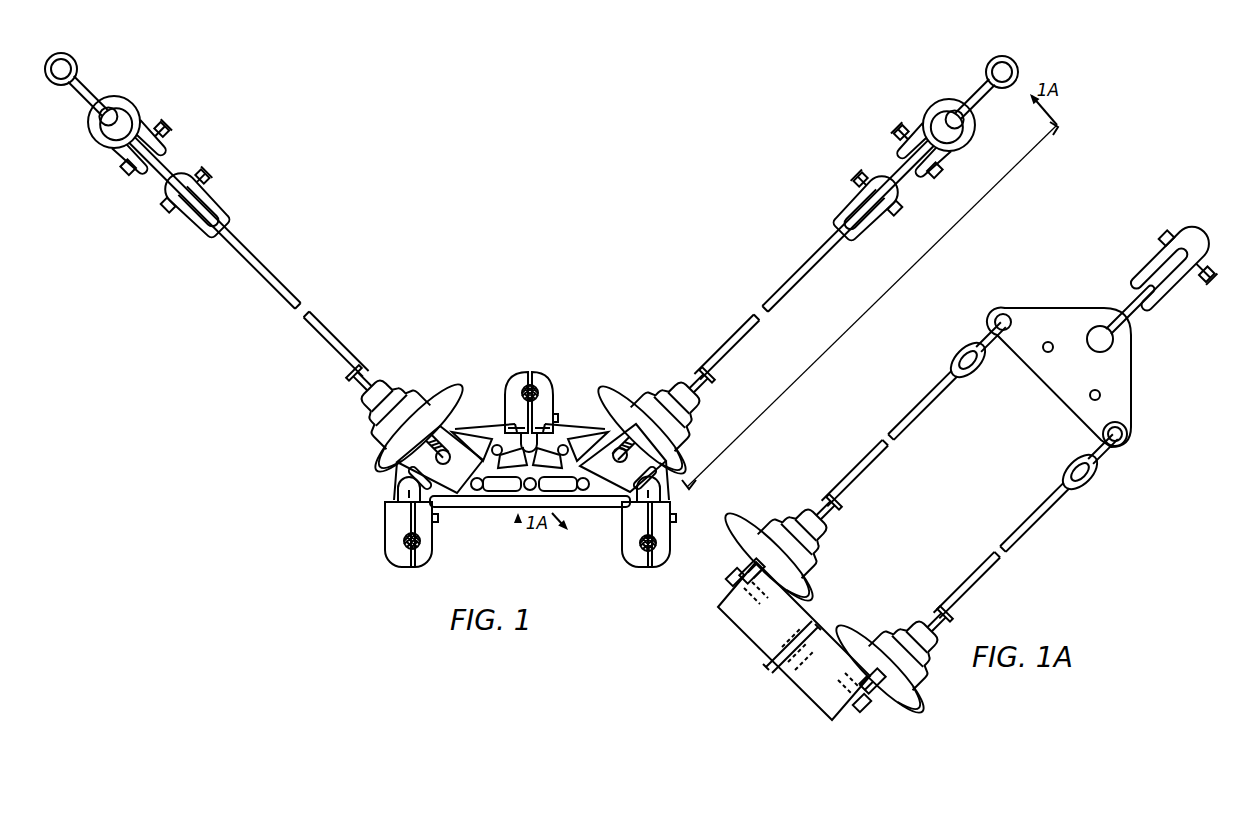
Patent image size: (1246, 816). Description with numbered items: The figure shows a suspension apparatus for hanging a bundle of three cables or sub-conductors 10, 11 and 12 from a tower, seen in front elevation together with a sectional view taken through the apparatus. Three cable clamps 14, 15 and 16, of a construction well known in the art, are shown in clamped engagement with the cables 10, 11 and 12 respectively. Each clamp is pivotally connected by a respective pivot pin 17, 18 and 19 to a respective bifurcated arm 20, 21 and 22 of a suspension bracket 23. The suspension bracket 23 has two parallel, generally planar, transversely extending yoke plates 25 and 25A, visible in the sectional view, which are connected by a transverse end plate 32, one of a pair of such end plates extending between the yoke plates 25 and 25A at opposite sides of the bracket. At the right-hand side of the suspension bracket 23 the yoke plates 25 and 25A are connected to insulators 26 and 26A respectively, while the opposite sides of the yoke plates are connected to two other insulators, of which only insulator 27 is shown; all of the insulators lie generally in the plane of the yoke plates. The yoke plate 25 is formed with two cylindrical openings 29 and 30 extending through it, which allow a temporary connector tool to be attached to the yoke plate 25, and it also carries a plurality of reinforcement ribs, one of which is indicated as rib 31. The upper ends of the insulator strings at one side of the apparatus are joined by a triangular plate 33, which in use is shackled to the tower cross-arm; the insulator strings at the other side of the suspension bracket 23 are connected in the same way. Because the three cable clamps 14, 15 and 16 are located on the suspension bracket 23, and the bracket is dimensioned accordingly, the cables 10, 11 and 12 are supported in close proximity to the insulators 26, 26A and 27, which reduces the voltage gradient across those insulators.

In FIG. 1, the cable 10 is at (418, 548).
In FIG. 1, the cable 11 is at (658, 545).
In FIG. 1, the cable 12 is at (540, 390).
In FIG. 1, the cable clamp 14 is at (398, 556).
In FIG. 1, the cable clamp 15 is at (637, 556).
In FIG. 1, the cable clamp 16 is at (513, 385).
In FIG. 1, the pivot pin 17 is at (437, 519).
In FIG. 1, the pivot pin 18 is at (676, 519).
In FIG. 1, the pivot pin 19 is at (557, 419).
In FIG. 1, the bifurcated arm 20 is at (397, 494).
In FIG. 1, the bifurcated arm 21 is at (659, 491).
In FIG. 1, the bifurcated arm 22 is at (512, 435).
In FIG. 1, the suspension bracket 23 is at (518, 517).
In FIG. 1, the yoke plate 25 is at (511, 497).
In FIG. 1A, the yoke plate 25 is at (726, 600).
In FIG. 1A, the yoke plate 25A is at (826, 718).
In FIG. 1, the insulator 26 is at (680, 450).
In FIG. 1A, the insulator 26 is at (804, 587).
In FIG. 1A, the insulator 26A is at (852, 632).
In FIG. 1, the insulator 27 is at (385, 452).
In FIG. 1, the cylindrical opening 29 is at (477, 490).
In FIG. 1, the cylindrical opening 30 is at (585, 490).
In FIG. 1, the reinforcement rib 31 is at (561, 487).
In FIG. 1A, the transverse end plate 32 is at (772, 632).
In FIG. 1A, the triangular plate 33 is at (1056, 372).